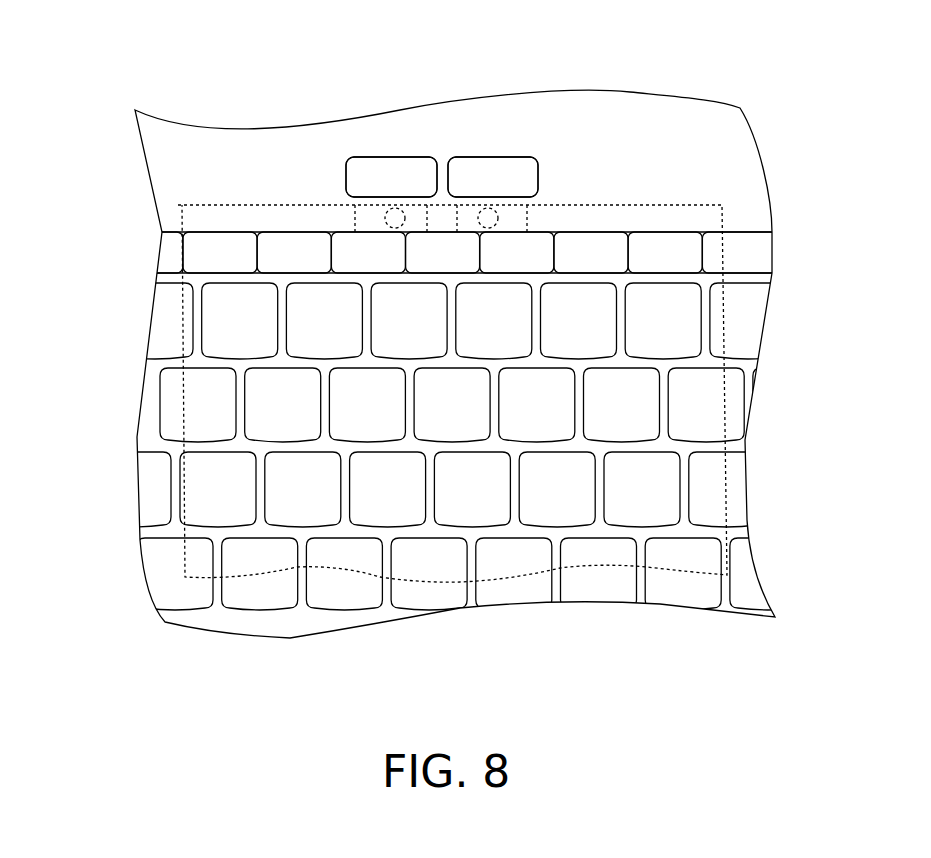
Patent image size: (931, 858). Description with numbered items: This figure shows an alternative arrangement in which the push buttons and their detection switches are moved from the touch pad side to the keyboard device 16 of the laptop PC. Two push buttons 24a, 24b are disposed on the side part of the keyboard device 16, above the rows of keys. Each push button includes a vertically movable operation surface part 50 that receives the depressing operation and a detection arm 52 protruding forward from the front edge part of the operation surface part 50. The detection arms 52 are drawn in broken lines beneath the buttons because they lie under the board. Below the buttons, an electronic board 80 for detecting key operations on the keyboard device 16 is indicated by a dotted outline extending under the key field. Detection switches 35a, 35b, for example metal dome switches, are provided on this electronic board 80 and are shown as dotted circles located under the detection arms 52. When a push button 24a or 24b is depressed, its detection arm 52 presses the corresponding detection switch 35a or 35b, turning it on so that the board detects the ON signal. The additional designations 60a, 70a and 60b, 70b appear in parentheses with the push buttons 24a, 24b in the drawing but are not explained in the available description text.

The keyboard device 16 is at (227, 320).
The push button 24a is at (354, 118).
The push button 24b is at (523, 118).
The first radiating element 60a is at (391, 177).
The first conductive patch 70a is at (390, 177).
The second radiating element 60b is at (493, 177).
The second conductive patch 70b is at (493, 170).
The detection switch 35a is at (400, 221).
The detection switch 35b is at (478, 219).
The operation surface part 50 is at (358, 178).
The detection arm 52 is at (352, 224).
The electronic board 80 is at (724, 223).